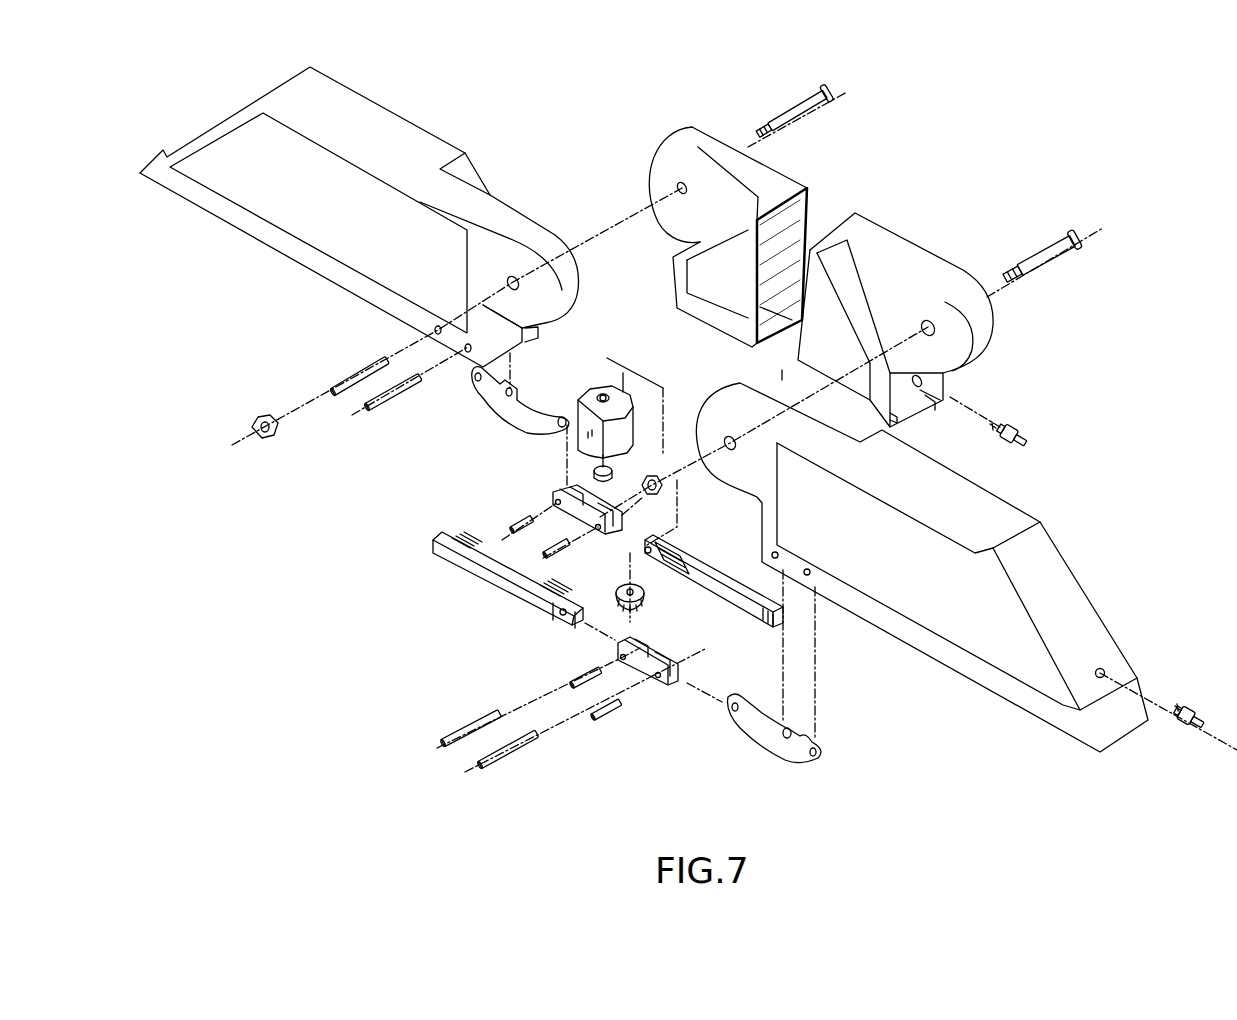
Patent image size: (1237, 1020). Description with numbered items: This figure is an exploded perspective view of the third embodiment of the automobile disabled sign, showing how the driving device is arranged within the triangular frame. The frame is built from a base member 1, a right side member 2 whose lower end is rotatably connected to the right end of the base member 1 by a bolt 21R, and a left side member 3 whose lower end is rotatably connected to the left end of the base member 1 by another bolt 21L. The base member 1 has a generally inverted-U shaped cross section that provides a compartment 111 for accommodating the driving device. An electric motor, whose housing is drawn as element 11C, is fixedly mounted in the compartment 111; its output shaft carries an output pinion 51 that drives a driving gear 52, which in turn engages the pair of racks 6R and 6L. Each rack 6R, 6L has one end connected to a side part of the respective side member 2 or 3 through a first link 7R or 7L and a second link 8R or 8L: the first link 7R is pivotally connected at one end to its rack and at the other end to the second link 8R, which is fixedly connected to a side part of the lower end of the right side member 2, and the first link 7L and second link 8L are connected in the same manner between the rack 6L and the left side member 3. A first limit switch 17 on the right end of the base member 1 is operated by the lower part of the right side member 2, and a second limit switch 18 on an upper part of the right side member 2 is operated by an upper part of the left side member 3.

The base member 1 is at (850, 227).
The compartment 111 is at (783, 223).
The right side member 2 is at (1020, 520).
The left side member 3 is at (403, 128).
The rack 6L is at (780, 618).
The rack 6R is at (433, 550).
The first link 7L is at (552, 495).
The first link 7R is at (648, 680).
The second link 8L is at (517, 430).
The second link 8R is at (743, 727).
The motor 11C is at (603, 390).
The first limit switch 17 is at (1023, 427).
The second limit switch 18 is at (1203, 720).
The bolt 21L is at (793, 113).
The bolt 21R is at (1070, 237).
The output pinion 51 is at (613, 466).
The driving gear 52 is at (645, 593).